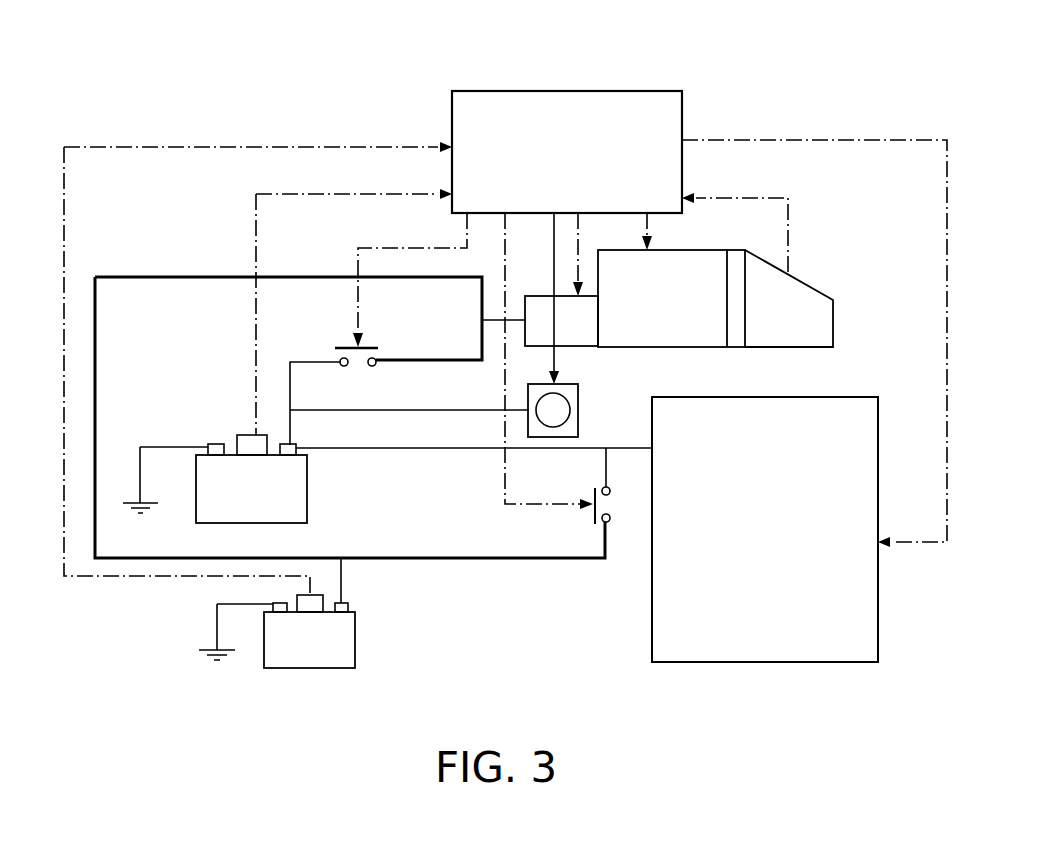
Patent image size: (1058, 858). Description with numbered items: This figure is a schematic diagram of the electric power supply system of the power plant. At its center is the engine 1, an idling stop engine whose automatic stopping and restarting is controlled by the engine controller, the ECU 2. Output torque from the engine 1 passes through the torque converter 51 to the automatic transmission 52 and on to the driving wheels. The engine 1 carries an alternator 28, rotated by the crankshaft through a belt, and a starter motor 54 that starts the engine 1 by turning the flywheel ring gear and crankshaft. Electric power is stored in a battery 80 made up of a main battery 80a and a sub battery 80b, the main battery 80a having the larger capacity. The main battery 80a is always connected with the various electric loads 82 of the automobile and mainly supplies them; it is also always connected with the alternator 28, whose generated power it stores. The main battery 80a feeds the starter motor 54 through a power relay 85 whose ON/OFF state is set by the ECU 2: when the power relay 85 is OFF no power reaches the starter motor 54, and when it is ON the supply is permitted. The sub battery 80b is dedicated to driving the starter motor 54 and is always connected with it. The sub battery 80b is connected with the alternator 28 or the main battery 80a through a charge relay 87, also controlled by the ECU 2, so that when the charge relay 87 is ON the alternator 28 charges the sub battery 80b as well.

The engine 1 is at (677, 347).
The engine controller (ECU) 2 is at (512, 91).
The alternator 28 is at (578, 420).
The torque converter 51 is at (738, 250).
The automatic transmission 52 is at (818, 290).
The starter motor 54 is at (583, 347).
The battery 80 is at (410, 478).
The main battery 80a is at (307, 490).
The sub battery 80b is at (355, 632).
The various electric loads 82 is at (852, 397).
The power relay 85 is at (378, 346).
The charge relay 87 is at (592, 493).